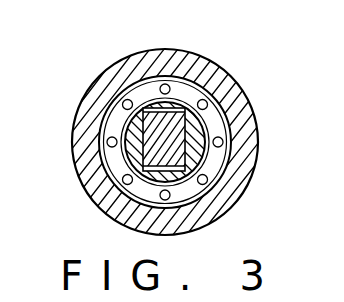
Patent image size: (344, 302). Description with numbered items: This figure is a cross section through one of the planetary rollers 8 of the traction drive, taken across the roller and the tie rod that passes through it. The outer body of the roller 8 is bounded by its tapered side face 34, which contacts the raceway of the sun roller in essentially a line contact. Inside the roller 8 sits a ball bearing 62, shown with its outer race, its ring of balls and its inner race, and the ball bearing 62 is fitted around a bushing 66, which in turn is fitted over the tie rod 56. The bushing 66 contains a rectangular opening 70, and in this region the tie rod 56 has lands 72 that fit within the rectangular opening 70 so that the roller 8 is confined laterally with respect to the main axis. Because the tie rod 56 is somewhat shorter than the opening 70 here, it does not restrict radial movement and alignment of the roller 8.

The first tapered side face 34 is at (172, 50).
The planetary roller 8 is at (237, 190).
The ball bearing 62 is at (210, 86).
The tie rod 56 is at (120, 205).
The land 72 is at (207, 104).
The bushing 66 is at (208, 155).
The rectangular opening 70 is at (150, 130).